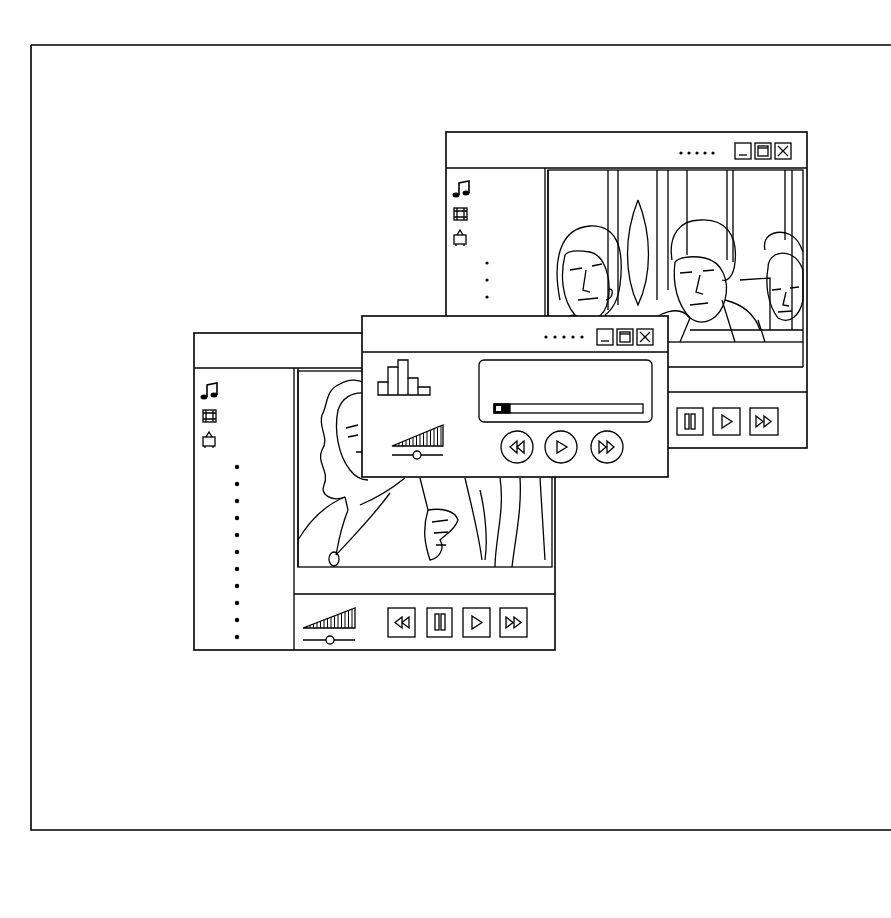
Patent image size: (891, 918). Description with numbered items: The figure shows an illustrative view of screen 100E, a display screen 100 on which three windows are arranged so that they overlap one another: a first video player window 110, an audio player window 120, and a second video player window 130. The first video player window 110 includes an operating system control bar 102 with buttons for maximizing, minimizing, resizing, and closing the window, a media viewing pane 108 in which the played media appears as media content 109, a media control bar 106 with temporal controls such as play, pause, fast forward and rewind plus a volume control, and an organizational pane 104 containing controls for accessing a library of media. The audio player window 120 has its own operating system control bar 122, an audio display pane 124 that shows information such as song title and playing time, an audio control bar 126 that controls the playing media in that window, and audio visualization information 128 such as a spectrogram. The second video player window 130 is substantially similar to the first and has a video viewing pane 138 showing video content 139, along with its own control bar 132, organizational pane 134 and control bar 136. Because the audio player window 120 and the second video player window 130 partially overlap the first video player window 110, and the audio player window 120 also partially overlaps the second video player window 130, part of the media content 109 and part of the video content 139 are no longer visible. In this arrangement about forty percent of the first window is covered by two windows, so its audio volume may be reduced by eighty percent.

The screen 100 is at (688, 45).
The screen 100E is at (559, 32).
The operating system control bar 102 is at (226, 335).
The organizational pane 104 is at (212, 533).
The media control bar 106 is at (462, 645).
The media viewing pane 108 is at (545, 577).
The media content 109 is at (537, 524).
The video player window 110 is at (264, 309).
The audio player window 120 is at (416, 306).
The operating system control bar 122 is at (662, 320).
The audio display pane 124 is at (652, 422).
The audio control bar 126 is at (594, 460).
The audio visualization information 128 is at (413, 372).
The second video player window 130 is at (651, 106).
The window control buttons 132 is at (800, 140).
The sidebar source list 134 is at (492, 177).
The playback control bar 136 is at (770, 445).
The video viewing pane 138 is at (787, 382).
The video content 139 is at (787, 208).